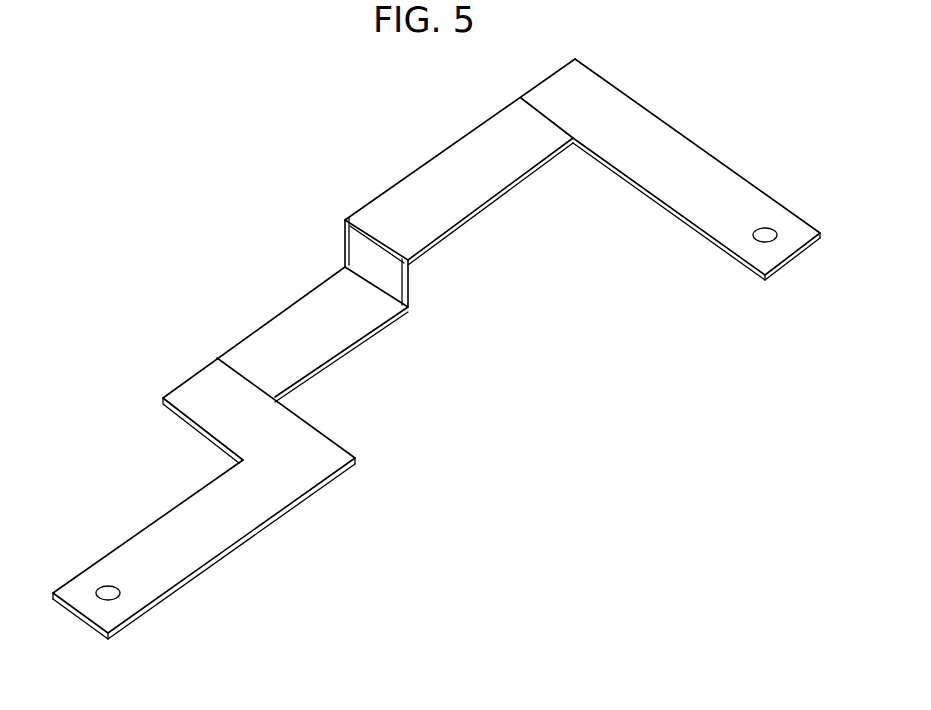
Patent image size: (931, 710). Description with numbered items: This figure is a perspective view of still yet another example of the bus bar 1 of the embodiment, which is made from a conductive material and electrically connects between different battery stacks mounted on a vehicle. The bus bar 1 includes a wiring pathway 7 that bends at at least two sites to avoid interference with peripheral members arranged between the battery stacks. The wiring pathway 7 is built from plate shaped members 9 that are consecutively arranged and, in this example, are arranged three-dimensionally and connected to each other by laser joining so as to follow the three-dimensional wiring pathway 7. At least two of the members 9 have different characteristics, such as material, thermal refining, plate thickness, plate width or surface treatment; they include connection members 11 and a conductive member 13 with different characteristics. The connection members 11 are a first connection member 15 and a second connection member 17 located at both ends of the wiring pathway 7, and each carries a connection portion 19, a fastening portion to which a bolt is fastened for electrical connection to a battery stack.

The bus bar 1 is at (321, 156).
The wiring pathway 7 is at (461, 447).
The plate shaped member 9 is at (433, 349).
The connection member 11 is at (436, 349).
The conductive member 13 is at (452, 170).
The first connection member 15 is at (187, 550).
The second connection member 17 is at (687, 190).
The connection portion 19 is at (107, 585).